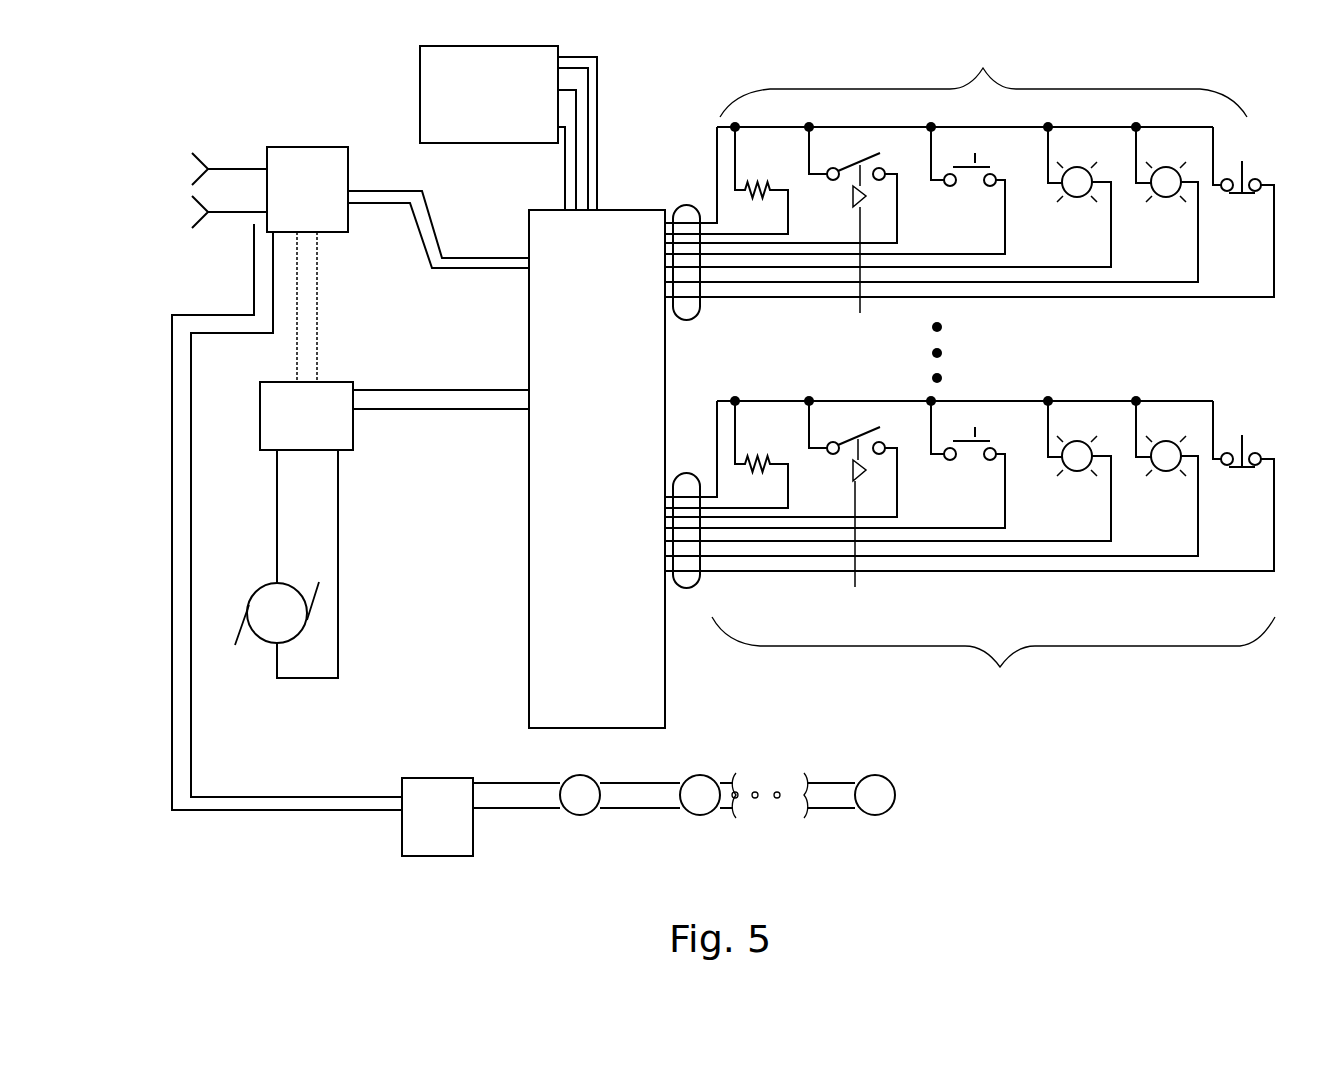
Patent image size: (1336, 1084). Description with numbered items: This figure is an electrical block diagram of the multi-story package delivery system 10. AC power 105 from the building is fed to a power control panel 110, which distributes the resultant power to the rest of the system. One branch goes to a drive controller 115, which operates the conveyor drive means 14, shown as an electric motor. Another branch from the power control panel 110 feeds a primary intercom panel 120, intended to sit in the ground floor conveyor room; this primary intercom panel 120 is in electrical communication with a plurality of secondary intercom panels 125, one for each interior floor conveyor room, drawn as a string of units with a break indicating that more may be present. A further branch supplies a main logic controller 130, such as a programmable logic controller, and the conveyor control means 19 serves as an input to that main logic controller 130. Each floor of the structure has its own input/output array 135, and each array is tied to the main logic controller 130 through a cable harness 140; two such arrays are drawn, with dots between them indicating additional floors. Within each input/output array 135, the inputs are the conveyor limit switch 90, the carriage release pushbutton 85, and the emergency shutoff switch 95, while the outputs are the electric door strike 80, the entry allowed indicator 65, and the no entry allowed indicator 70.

The multi-story package delivery system 10 is at (327, 863).
The conveyor drive means 14 is at (277, 598).
The conveyor control means 19 is at (486, 123).
The entry allowed indicator 65 is at (1058, 582).
The no entry allowed indicator 70 is at (1178, 580).
The electric door strike 80 is at (783, 598).
The carriage release pushbutton 85 is at (955, 587).
The conveyor limit switch 90 is at (781, 378).
The emergency shutoff switch 95 is at (1248, 410).
The AC power 105 is at (178, 188).
The power control panel 110 is at (300, 160).
The drive controller 115 is at (315, 395).
The primary intercom panel 120 is at (435, 800).
The secondary intercom panels 125 is at (890, 832).
The main logic controller 130 is at (604, 235).
The input/output array 135 is at (1007, 705).
The cable harness 140 is at (700, 657).